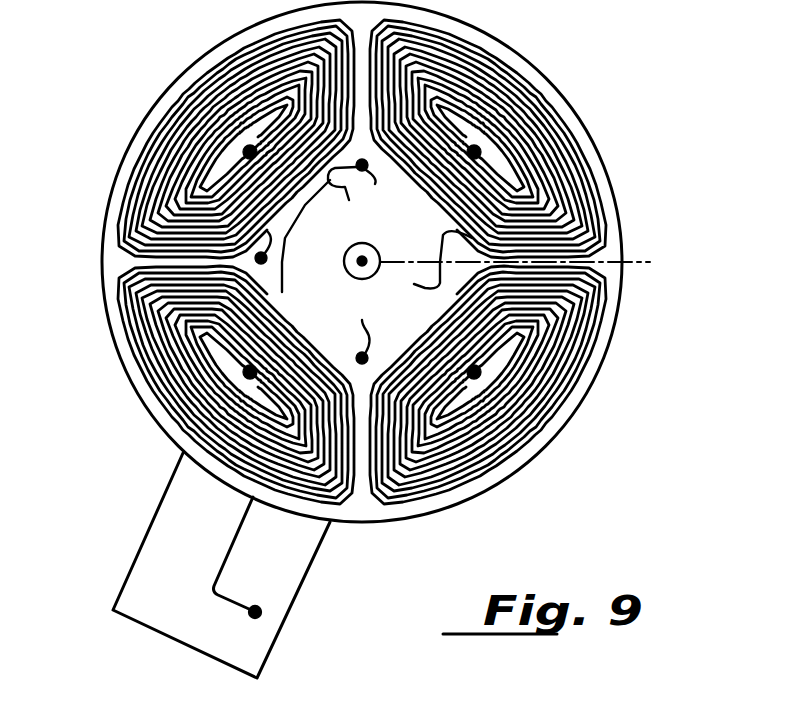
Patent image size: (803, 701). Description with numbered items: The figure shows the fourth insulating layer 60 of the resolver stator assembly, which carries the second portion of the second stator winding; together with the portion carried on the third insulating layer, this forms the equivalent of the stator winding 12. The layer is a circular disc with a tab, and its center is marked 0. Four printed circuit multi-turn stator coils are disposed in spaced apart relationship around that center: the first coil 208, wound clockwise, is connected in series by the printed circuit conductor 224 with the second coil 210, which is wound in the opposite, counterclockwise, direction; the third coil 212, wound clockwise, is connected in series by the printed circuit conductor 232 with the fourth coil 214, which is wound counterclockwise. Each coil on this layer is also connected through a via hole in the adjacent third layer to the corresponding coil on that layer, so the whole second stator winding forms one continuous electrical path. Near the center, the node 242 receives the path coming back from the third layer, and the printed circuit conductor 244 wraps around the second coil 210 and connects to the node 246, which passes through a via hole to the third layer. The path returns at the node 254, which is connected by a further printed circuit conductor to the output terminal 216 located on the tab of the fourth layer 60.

The center point 0 is at (362, 261).
The stator winding 12 is at (526, 267).
The fourth insulating layer 60 is at (610, 173).
The first coil of the fourth layer 208 is at (130, 363).
The second coil of the fourth layer 210 is at (147, 129).
The third coil of the fourth layer 212 is at (572, 118).
The fourth coil of the fourth layer 214 is at (511, 474).
The output terminal 216 is at (261, 608).
The printed circuit conductor 224 is at (306, 238).
The printed circuit conductor 232 is at (426, 267).
The node 242 is at (374, 189).
The printed circuit conductor 244 is at (334, 198).
The node 246 is at (250, 259).
The node 254 is at (349, 333).